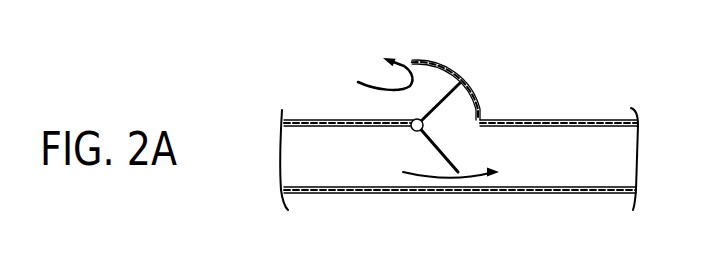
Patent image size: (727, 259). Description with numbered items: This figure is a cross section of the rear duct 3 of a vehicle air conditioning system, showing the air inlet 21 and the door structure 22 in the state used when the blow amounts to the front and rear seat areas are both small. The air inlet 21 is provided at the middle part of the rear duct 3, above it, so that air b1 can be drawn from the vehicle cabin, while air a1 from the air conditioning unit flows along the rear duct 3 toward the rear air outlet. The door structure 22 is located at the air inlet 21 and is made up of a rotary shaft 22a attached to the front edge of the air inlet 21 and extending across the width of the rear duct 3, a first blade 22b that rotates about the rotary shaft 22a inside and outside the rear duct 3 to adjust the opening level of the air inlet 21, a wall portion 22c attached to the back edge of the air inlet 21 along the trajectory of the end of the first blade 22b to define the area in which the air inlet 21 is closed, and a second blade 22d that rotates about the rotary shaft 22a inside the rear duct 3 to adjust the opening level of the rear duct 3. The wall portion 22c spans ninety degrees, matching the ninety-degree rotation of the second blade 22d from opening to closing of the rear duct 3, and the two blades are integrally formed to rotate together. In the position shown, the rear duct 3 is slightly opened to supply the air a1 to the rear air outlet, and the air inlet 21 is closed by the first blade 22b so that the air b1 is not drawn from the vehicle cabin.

The rear duct 3 is at (603, 194).
The air inlet 21 is at (418, 105).
The door structure 22 is at (485, 128).
The rotary shaft 22a is at (413, 130).
The first blade 22b is at (441, 94).
The wall portion 22c is at (483, 117).
The second blade 22d is at (450, 153).
The air from the air conditioning unit a1 is at (456, 178).
The air from the vehicle cabin b1 is at (408, 72).